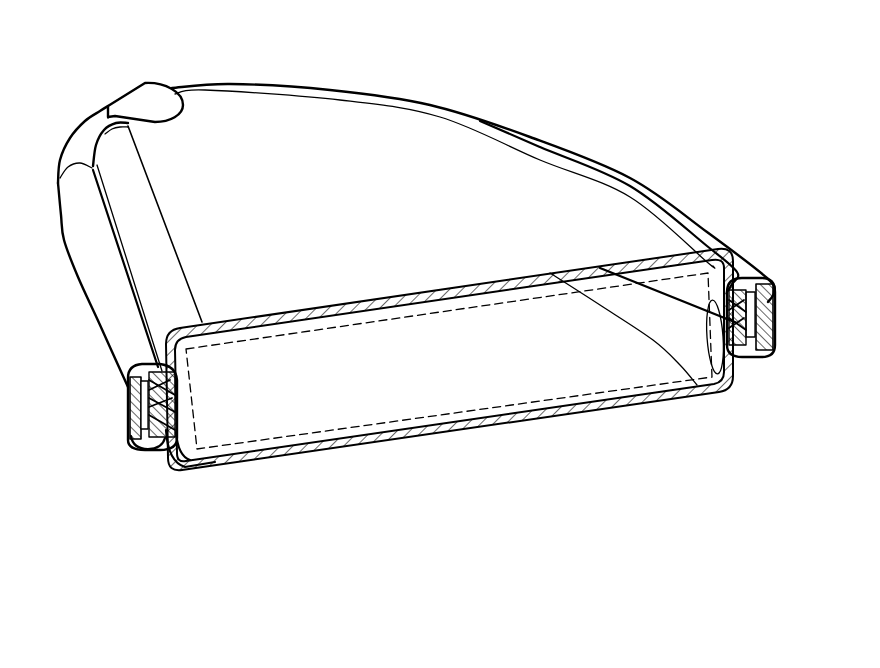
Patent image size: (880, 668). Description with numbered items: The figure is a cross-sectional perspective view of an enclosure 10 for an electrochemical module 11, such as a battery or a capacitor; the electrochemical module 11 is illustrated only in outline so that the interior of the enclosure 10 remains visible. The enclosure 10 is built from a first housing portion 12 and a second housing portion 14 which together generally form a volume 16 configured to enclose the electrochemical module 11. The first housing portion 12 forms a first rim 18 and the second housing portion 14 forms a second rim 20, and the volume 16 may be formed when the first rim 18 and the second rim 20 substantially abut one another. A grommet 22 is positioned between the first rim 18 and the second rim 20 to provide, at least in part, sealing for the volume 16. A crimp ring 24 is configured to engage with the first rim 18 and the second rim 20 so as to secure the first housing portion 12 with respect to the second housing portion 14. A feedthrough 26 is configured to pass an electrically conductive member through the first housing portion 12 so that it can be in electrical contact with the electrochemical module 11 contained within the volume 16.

The enclosure 10 is at (166, 496).
The electrochemical module 11 is at (247, 447).
The first housing portion 12 is at (388, 130).
The second housing portion 14 is at (327, 410).
The volume 16 is at (493, 360).
The first rim 18 is at (140, 387).
The second rim 20 is at (133, 442).
The grommet 22 is at (715, 373).
The crimp ring 24 is at (775, 293).
The feedthrough 26 is at (142, 103).